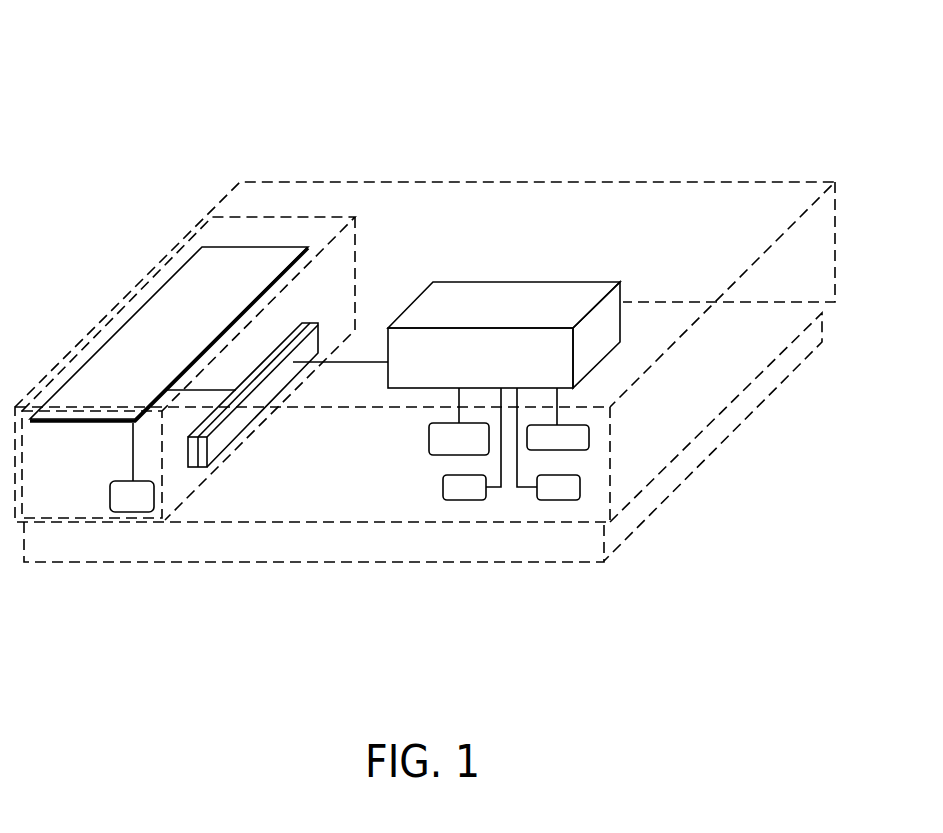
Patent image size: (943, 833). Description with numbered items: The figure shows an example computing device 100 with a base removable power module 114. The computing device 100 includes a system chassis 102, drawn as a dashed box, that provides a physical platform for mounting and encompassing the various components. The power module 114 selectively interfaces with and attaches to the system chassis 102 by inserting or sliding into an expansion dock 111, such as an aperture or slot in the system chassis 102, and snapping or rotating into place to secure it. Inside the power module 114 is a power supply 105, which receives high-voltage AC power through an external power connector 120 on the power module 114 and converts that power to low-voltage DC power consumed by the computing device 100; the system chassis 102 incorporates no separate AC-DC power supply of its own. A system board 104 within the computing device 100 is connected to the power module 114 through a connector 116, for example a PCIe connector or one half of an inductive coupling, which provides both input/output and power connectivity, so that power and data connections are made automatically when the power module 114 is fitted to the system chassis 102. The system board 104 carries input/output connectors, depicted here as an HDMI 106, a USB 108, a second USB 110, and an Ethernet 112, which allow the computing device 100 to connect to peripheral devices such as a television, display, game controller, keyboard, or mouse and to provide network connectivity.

The computing device 100 is at (194, 110).
The system chassis 102 is at (726, 248).
The system board 104 is at (497, 380).
The power supply 105 is at (106, 424).
The HDMI 106 is at (430, 453).
The USB 108 is at (465, 500).
The USB 110 is at (580, 488).
The expansion dock 111 is at (93, 510).
The Ethernet 112 is at (589, 437).
The power module 114 is at (172, 250).
The connector 116 is at (217, 458).
The external power connector 120 is at (137, 512).